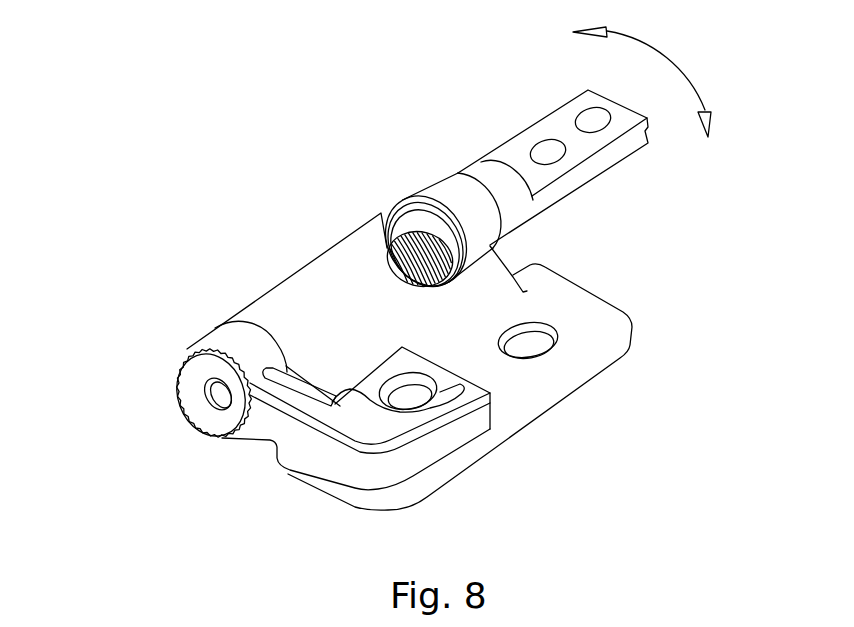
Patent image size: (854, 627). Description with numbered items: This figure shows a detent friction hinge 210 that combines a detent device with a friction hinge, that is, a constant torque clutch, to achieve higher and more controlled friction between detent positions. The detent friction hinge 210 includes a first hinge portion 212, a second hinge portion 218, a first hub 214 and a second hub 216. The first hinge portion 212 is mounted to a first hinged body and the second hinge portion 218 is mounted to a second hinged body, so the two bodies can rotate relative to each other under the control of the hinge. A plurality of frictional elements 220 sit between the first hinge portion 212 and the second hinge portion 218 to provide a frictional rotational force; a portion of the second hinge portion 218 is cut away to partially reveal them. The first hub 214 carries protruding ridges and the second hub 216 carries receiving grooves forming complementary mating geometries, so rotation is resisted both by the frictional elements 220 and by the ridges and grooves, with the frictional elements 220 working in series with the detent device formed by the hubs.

The detent friction hinge 210 is at (266, 184).
The first hinge portion 212 is at (568, 137).
The first hub 214 is at (198, 372).
The second hub 216 is at (311, 440).
The second hinge portion 218 is at (510, 370).
The frictional elements 220 is at (427, 242).